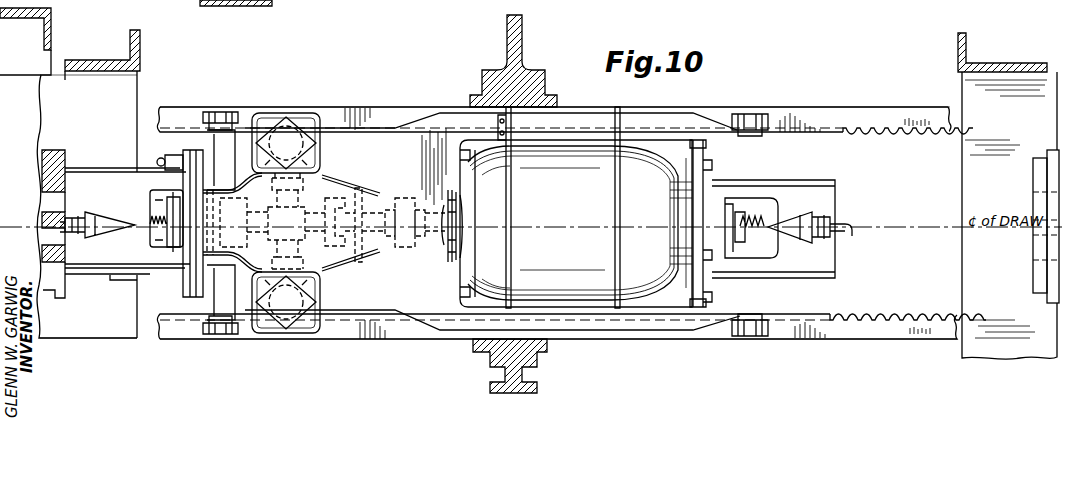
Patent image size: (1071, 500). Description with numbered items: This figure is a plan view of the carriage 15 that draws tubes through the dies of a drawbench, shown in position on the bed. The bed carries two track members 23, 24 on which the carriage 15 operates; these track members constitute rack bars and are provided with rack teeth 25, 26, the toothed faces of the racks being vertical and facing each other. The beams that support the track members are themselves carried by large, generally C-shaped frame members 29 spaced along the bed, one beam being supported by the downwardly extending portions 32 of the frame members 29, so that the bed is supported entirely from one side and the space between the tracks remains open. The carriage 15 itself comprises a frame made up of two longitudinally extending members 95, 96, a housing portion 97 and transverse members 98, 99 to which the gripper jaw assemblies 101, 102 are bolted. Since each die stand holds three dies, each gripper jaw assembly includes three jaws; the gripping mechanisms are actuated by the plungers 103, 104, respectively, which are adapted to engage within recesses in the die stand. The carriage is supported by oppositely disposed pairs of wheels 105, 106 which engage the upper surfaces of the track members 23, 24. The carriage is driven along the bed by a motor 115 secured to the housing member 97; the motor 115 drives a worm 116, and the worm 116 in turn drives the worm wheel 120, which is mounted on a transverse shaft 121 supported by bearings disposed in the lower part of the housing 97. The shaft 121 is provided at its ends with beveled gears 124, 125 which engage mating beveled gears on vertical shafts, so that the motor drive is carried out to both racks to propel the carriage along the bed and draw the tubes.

The carriage 15 is at (664, 112).
The track member 23 is at (840, 118).
The track member 24 is at (850, 336).
The rack teeth 25 is at (892, 135).
The rack teeth 26 is at (862, 318).
The frame member 29 is at (521, 42).
The downwardly extending portion 32 is at (538, 378).
The longitudinally extending member 95 is at (580, 115).
The longitudinally extending member 96 is at (693, 330).
The housing portion 97 is at (436, 298).
The transverse member 98 is at (212, 142).
The transverse member 99 is at (740, 141).
The gripper jaw assembly 101 is at (123, 268).
The gripper jaw assembly 102 is at (812, 266).
The plunger 103 is at (58, 221).
The plunger 104 is at (832, 226).
The wheels 105 is at (241, 104).
The wheels 106 is at (756, 116).
The motor 115 is at (597, 211).
The worm 116 is at (306, 205).
The worm wheel 120 is at (313, 216).
The transverse shaft 121 is at (303, 190).
The beveled gear 124 is at (344, 106).
The beveled gear 125 is at (317, 284).